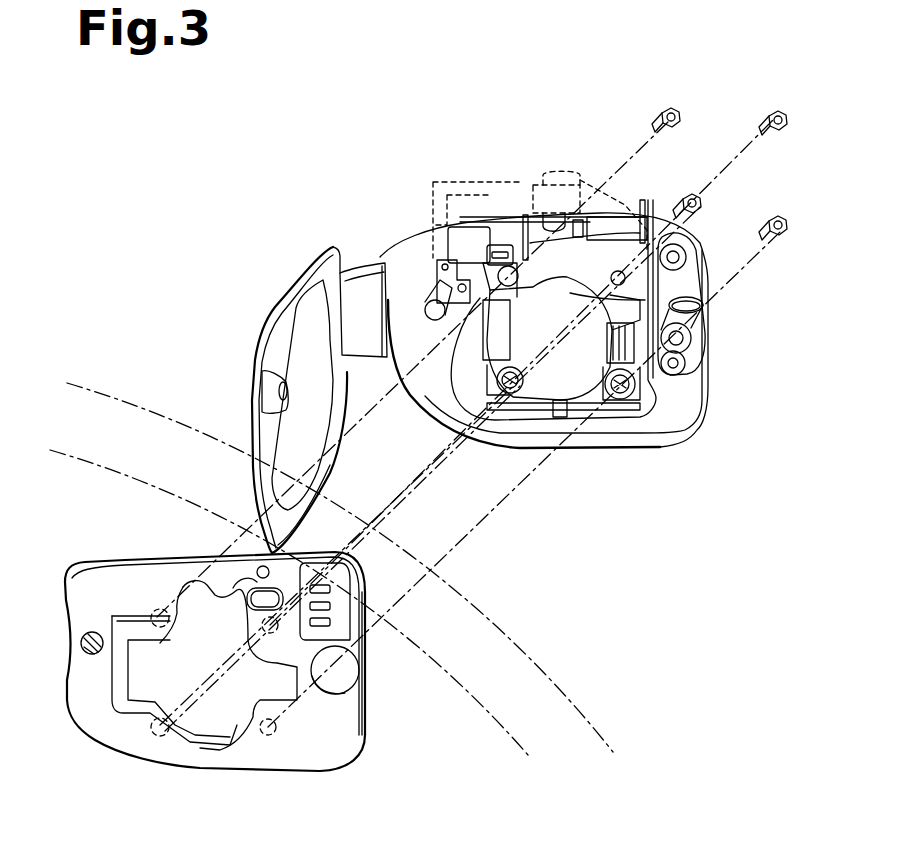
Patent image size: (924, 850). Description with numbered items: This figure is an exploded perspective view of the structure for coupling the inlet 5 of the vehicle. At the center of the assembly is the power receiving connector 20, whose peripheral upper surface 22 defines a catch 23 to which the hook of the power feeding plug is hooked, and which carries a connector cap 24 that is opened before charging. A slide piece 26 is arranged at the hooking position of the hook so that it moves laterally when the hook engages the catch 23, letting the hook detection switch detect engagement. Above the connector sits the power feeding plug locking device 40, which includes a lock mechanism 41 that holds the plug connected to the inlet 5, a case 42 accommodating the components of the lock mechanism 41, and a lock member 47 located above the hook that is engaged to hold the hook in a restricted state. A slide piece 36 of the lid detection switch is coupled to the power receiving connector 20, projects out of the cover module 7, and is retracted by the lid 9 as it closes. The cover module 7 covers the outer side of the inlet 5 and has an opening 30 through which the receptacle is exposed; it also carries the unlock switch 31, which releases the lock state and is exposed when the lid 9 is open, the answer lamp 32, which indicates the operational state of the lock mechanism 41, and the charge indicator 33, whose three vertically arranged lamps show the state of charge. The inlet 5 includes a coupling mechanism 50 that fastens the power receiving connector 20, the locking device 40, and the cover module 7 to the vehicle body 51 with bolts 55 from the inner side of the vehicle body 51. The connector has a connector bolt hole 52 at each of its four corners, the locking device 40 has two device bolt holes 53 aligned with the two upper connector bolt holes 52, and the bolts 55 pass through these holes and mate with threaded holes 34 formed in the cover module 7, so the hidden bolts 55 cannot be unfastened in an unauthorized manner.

The inlet 5 is at (303, 149).
The cover module 7 is at (366, 694).
The lid 9 is at (256, 381).
The power receiving connector 20 is at (632, 445).
The peripheral upper surface 22 is at (700, 297).
The catch 23 is at (648, 232).
The connector cap 24 is at (490, 378).
The slide piece 26 is at (493, 242).
The opening 30 is at (298, 692).
The unlock switch 31 is at (250, 620).
The answer lamp 32 is at (223, 585).
The charge indicator 33 is at (349, 572).
The threaded holes 34 is at (157, 610).
The slide piece 36 is at (428, 317).
The power feeding plug locking device 40 is at (559, 158).
The lock mechanism 41 is at (525, 188).
The case 42 is at (468, 182).
The lock member 47 is at (532, 233).
The coupling mechanism 50 is at (654, 548).
The vehicle body 51 is at (688, 430).
The connector bolt holes 52 is at (500, 395).
The device bolt holes 53 is at (503, 276).
The bolts 55 is at (766, 120).